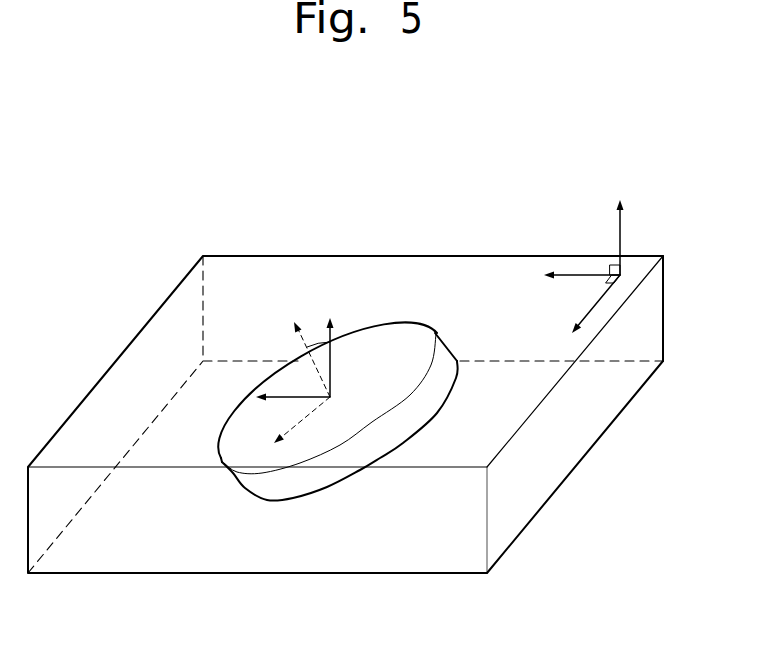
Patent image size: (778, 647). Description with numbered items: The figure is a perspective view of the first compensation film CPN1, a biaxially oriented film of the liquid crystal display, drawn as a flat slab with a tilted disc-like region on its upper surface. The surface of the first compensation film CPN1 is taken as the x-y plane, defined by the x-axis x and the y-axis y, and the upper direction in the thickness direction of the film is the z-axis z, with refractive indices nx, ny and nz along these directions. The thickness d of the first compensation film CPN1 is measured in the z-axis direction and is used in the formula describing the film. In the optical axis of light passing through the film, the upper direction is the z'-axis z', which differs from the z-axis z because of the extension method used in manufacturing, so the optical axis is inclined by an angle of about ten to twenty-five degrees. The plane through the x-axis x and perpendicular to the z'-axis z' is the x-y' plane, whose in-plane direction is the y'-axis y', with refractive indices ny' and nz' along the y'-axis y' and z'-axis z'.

The first compensation film CPN1 is at (475, 230).
The thickness d is at (663, 256).
The x-axis x is at (590, 311).
The y-axis y is at (576, 274).
The z-axis z is at (617, 228).
The z'-axis z' is at (307, 349).
The y'-axis y' is at (291, 428).